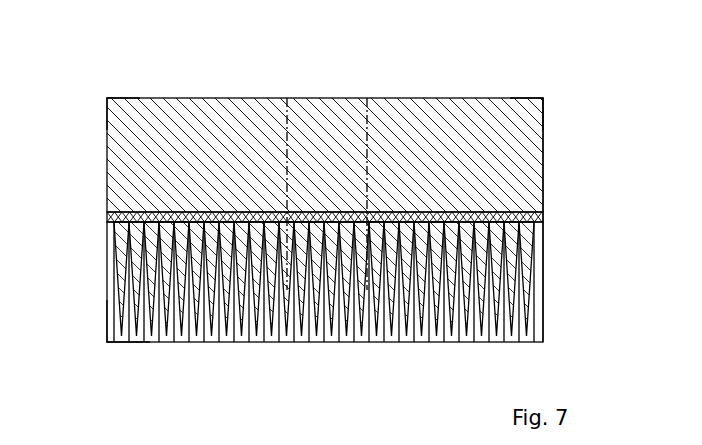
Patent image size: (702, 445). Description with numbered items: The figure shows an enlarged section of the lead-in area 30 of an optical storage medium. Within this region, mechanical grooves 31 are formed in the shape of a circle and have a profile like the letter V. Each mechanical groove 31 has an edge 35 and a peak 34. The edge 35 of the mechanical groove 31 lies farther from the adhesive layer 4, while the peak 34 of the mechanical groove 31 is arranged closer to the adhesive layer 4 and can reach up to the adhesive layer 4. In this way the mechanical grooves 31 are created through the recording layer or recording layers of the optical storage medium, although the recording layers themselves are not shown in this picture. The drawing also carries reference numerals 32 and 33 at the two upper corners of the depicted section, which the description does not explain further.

The lead-in area 30 is at (325, 180).
The first edge 32 is at (107, 98).
The second edge 33 is at (543, 98).
The peak of the mechanical groove 34 is at (106, 216).
The adhesive layer 4 is at (544, 213).
The mechanical groove 31 is at (108, 340).
The edge of the mechanical groove 35 is at (168, 342).